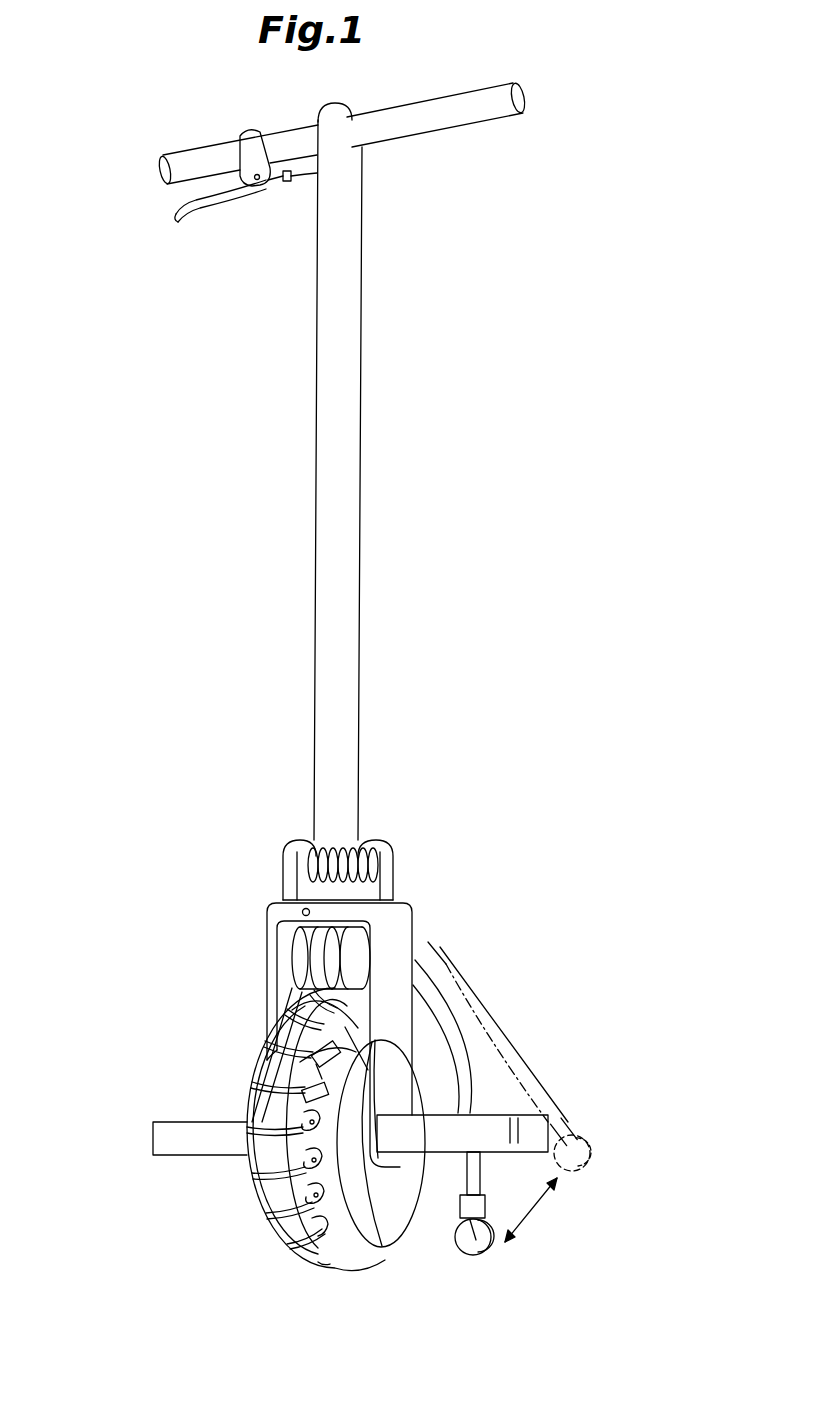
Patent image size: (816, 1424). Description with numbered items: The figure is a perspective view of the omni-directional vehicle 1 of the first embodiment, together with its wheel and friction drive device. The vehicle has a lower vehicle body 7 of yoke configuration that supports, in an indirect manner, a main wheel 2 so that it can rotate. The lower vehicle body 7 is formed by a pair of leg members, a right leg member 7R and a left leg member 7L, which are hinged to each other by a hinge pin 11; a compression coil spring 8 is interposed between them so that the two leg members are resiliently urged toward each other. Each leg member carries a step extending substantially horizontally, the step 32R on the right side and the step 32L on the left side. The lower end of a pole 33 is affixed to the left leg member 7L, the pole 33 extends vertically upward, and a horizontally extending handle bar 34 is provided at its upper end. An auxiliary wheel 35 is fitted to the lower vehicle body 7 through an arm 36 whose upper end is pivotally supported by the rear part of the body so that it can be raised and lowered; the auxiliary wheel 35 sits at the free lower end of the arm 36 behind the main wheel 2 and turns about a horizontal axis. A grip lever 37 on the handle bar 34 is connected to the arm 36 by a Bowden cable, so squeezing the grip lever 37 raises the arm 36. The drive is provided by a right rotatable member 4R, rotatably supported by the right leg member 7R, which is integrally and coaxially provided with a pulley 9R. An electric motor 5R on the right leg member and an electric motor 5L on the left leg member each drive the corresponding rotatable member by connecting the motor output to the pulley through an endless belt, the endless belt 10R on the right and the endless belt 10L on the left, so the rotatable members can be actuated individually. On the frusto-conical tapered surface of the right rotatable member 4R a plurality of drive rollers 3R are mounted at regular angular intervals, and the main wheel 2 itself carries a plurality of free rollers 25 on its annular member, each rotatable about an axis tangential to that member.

The omni-directional vehicle 1 is at (500, 830).
The main wheel 2 is at (276, 1129).
The drive rollers 3R is at (333, 1268).
The right rotatable member 4R is at (307, 1103).
The electric motor 5L is at (312, 957).
The electric motor 5R is at (400, 967).
The lower vehicle body 7 is at (334, 1017).
The left leg member 7L is at (266, 973).
The right leg member 7R is at (397, 940).
The compression coil spring 8 is at (307, 857).
The pulley 9R is at (393, 1203).
The endless belt 10L is at (273, 1020).
The endless belt 10R is at (400, 1037).
The hinge pin 11 is at (302, 911).
The free rollers 25 is at (280, 1203).
The step 32L is at (183, 1130).
The step 32R is at (490, 1115).
The pole 33 is at (347, 572).
The handle bar 34 is at (437, 122).
The auxiliary wheel 35 is at (487, 1245).
The arm 36 is at (443, 1013).
The grip lever 37 is at (210, 200).